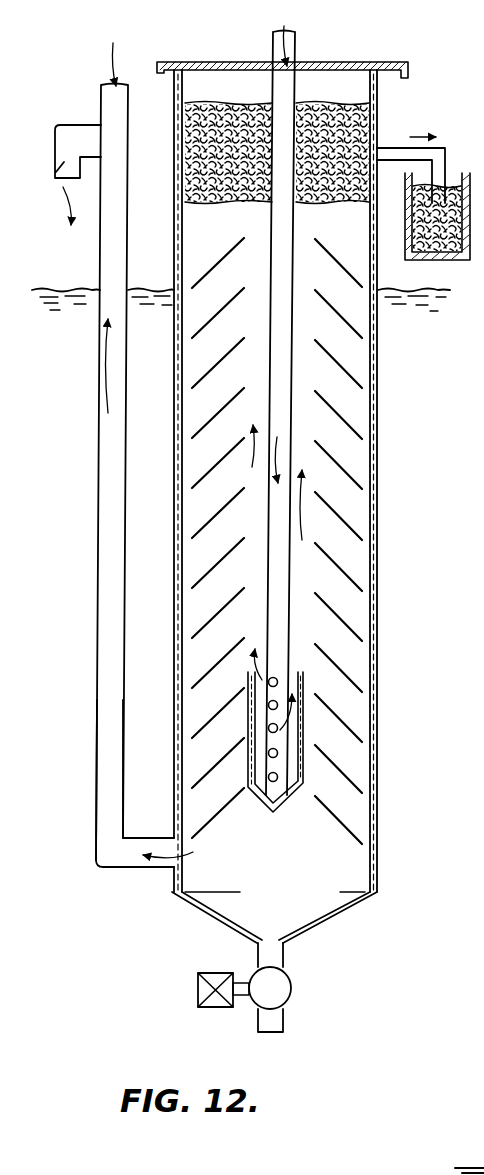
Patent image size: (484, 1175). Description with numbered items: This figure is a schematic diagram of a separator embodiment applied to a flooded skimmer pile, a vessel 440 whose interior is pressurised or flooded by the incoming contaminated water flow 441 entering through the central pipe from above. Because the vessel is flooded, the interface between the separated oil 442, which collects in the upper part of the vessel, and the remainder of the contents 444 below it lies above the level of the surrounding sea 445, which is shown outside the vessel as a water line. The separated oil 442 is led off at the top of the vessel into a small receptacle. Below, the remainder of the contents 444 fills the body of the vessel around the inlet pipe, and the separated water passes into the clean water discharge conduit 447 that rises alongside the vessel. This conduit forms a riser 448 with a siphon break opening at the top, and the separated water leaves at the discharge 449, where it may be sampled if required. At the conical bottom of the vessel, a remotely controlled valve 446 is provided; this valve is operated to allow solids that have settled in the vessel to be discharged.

The tank 440 is at (375, 444).
The incoming contaminated water flow 441 is at (284, 24).
The separated oil 442 is at (348, 172).
The remainder of the contents 444 is at (348, 357).
The sea 445 is at (72, 290).
The remotely controlled valve 446 is at (267, 997).
The clean water discharge conduit 447 is at (113, 712).
The riser pipe 448 is at (124, 84).
The discharge 449 is at (53, 175).